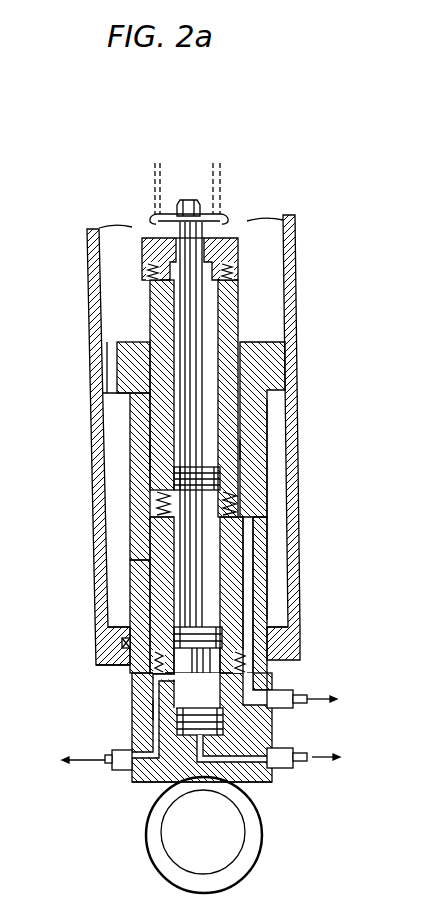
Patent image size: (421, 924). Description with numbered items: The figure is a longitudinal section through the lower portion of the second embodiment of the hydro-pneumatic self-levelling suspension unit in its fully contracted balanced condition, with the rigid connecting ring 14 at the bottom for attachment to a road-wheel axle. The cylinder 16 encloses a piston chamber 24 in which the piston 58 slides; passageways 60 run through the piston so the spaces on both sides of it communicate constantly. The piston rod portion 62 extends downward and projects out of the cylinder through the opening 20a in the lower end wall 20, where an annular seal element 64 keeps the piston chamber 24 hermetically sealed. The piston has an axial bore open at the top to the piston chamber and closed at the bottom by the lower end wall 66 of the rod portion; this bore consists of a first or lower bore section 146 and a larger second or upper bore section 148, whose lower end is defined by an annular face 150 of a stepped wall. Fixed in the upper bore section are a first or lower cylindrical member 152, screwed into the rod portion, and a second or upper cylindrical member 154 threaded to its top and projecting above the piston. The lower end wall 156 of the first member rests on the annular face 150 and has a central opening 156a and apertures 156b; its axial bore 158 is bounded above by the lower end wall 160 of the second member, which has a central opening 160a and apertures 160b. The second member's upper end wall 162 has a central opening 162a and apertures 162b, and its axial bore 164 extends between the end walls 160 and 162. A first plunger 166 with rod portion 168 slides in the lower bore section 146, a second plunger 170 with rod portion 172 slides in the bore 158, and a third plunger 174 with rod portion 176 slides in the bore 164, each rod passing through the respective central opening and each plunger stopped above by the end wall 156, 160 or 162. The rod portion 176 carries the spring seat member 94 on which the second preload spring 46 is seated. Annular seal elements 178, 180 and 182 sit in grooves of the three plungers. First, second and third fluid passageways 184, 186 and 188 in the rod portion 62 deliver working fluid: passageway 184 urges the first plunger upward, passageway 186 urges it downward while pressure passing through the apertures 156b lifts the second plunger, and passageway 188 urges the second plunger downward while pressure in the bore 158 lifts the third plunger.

The rigid connecting ring 14 is at (252, 856).
The cylinder 16 is at (84, 311).
The lower end wall 20 is at (108, 668).
The opening 20a is at (97, 638).
The piston chamber 24 is at (283, 262).
The second preload spring 46 is at (154, 182).
The piston 58 is at (270, 330).
The passageways 60 is at (283, 400).
The piston rod portion 62 is at (262, 447).
The annular seal element 64 is at (283, 640).
The lower end wall 66 is at (264, 783).
The spring seat member 94 is at (213, 184).
The first or lower bore section 146 is at (272, 716).
The second or upper bore section 148 is at (155, 345).
The annular face 150 is at (272, 680).
The first or lower cylindrical member 152 is at (128, 575).
The second or upper cylindrical member 154 is at (112, 404).
The lower end wall 156 is at (135, 705).
The central opening 156a is at (112, 768).
The apertures 156b is at (152, 720).
The axial bore 158 is at (128, 599).
The lower end wall 160 is at (150, 546).
The central opening 160a is at (157, 502).
The apertures 160b is at (160, 512).
The upper end wall 162 is at (224, 238).
The central opening 162a is at (180, 240).
The apertures 162b is at (142, 268).
The axial bore 164 is at (216, 286).
The first plunger 166 is at (223, 763).
The rod portion 168 is at (205, 736).
The second plunger 170 is at (224, 618).
The rod portion 172 is at (206, 560).
The third plunger 174 is at (150, 455).
The rod portion 176 is at (127, 372).
The annular seal element 178 is at (272, 734).
The annular seal element 180 is at (120, 648).
The annular seal element 182 is at (222, 477).
The first fluid passageway 184 is at (272, 778).
The second fluid passageway 186 is at (127, 772).
The third fluid passageway 188 is at (252, 583).